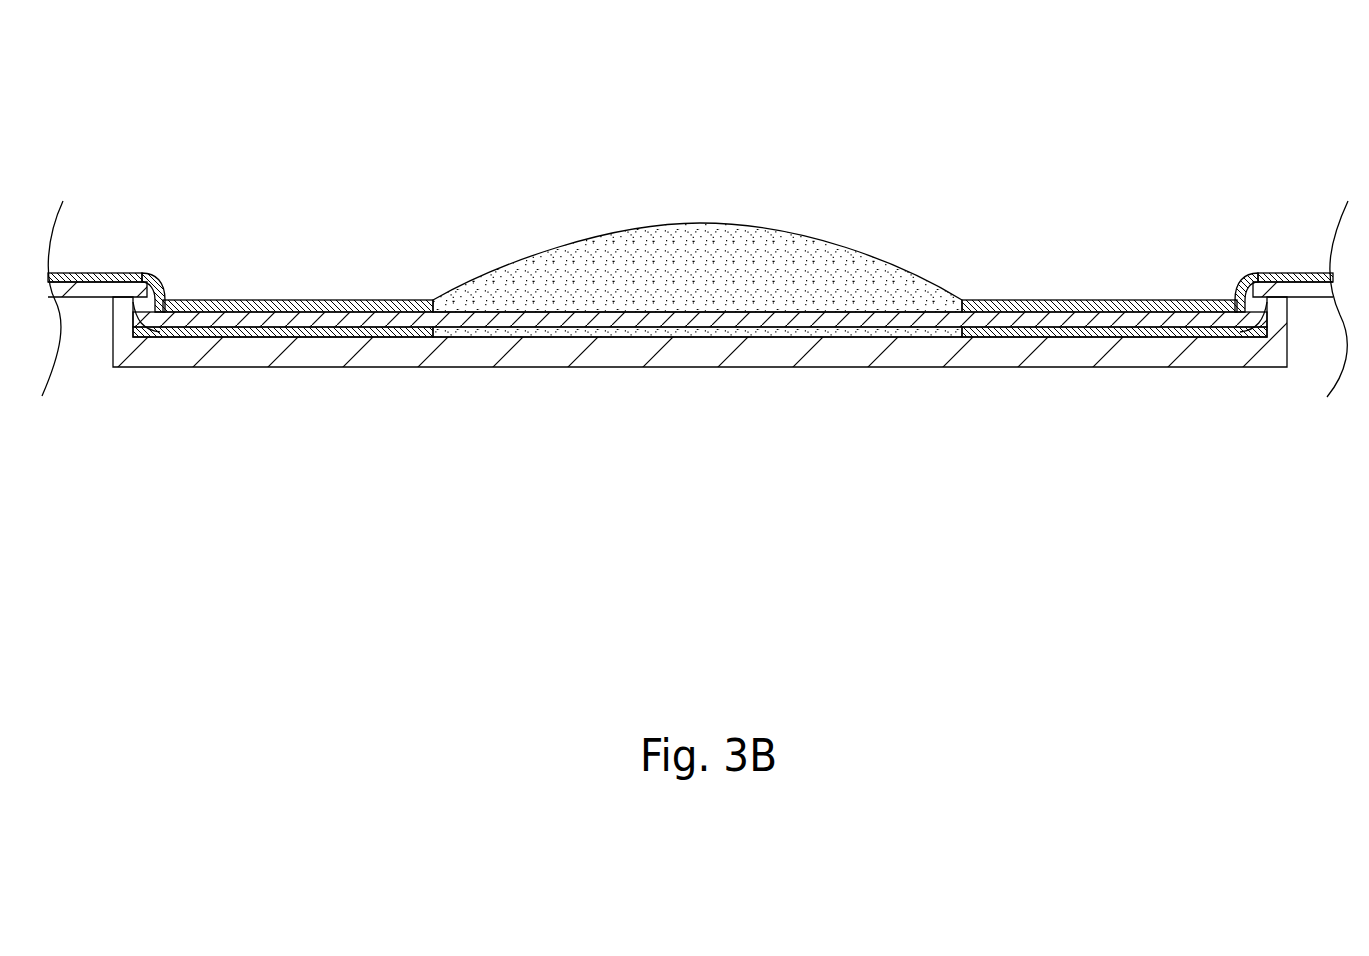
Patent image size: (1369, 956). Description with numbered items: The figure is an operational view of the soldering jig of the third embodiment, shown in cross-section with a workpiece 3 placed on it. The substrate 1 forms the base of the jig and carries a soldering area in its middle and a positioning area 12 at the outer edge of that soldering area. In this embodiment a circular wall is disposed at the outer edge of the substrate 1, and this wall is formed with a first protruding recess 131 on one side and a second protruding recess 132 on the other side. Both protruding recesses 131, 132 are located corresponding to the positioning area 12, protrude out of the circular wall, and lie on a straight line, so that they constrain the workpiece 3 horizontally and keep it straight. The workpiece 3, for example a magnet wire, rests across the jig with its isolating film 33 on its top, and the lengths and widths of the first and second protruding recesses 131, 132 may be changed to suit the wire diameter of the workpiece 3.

The substrate 1 is at (555, 367).
The positioning area 12 is at (210, 335).
The workpiece 3 is at (1015, 300).
The isolating film 33 is at (308, 300).
The first protruding recess 131 is at (173, 298).
The second protruding recess 132 is at (1228, 300).